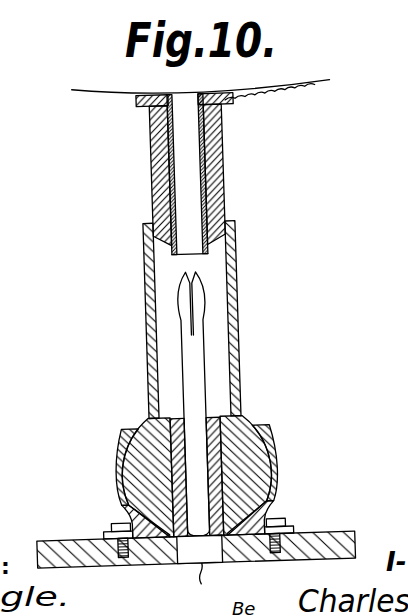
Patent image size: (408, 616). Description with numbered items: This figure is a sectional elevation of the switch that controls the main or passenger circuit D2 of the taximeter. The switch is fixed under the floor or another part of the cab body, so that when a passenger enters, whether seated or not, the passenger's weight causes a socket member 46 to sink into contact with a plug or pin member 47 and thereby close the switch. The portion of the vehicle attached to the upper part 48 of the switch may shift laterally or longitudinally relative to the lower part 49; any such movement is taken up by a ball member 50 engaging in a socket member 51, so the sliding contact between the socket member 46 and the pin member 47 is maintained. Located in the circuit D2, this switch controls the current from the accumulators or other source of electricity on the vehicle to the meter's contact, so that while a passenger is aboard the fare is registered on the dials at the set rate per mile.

The socket member 46 is at (198, 191).
The plug or pin member 47 is at (197, 357).
The upper part 48 is at (271, 86).
The lower part 49 is at (300, 553).
The ball member 50 is at (238, 462).
The socket member 51 is at (122, 458).
The circuit D2 is at (161, 586).